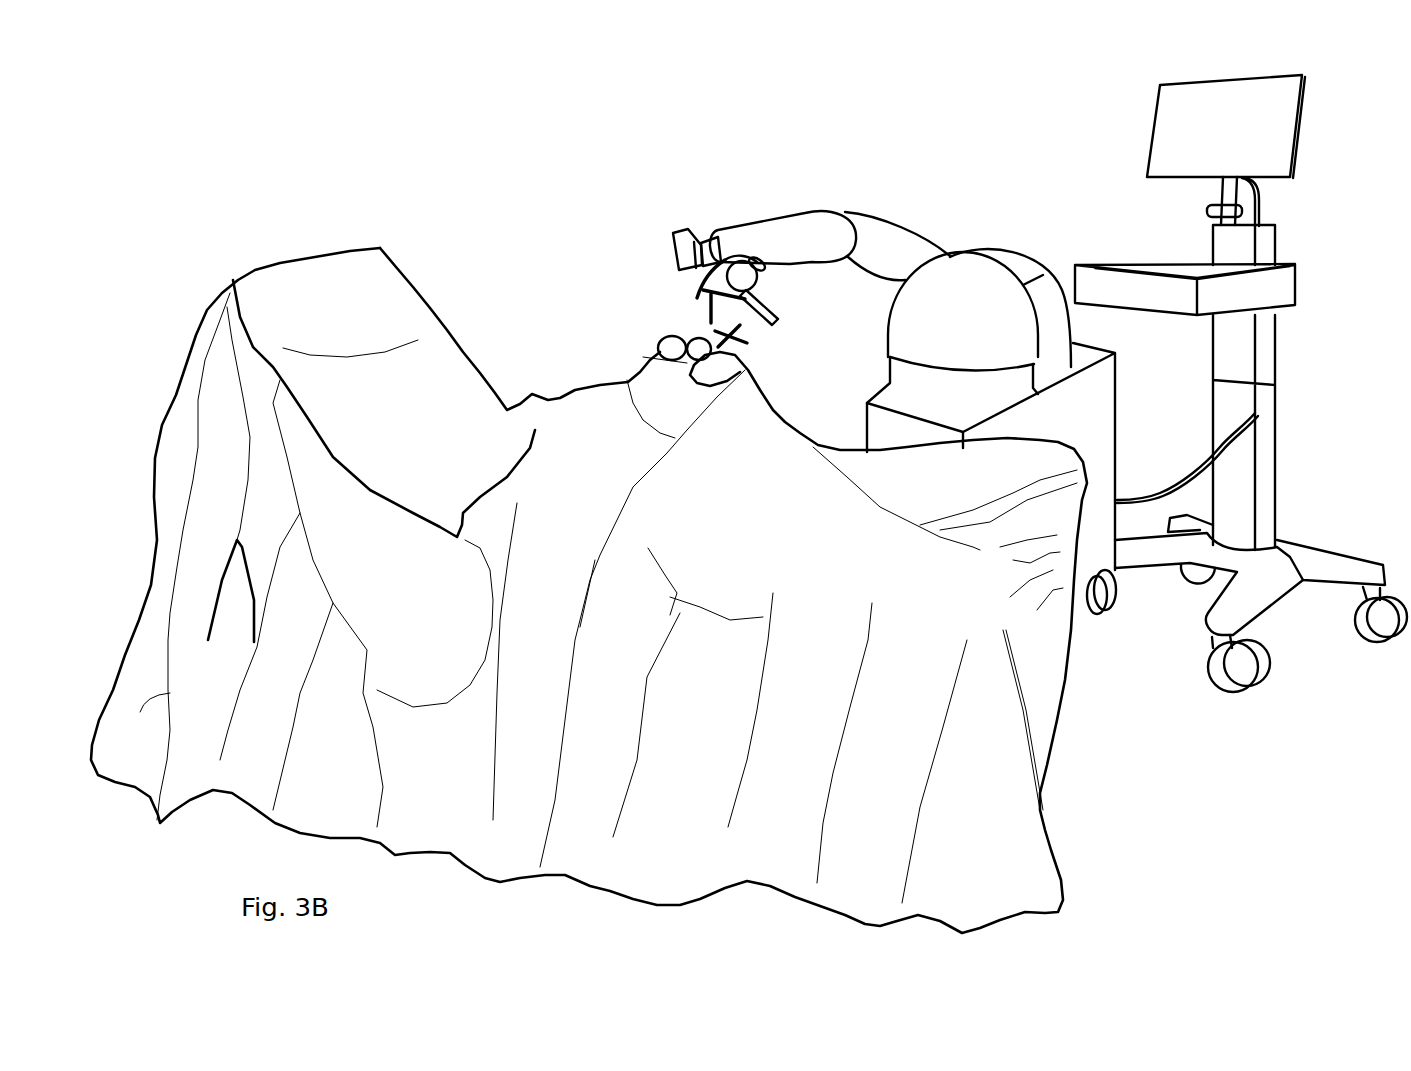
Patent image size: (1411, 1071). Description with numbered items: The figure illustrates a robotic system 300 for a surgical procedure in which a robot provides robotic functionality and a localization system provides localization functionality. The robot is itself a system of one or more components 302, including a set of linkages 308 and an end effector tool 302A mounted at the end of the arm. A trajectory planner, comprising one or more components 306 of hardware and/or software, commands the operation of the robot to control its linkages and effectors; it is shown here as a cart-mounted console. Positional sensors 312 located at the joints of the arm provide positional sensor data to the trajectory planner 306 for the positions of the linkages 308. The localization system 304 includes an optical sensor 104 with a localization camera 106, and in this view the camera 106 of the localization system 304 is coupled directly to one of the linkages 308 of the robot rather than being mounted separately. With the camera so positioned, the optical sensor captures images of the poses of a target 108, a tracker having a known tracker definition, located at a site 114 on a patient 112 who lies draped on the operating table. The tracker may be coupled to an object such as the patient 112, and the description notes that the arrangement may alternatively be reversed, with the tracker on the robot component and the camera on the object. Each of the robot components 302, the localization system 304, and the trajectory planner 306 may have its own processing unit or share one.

The robotic system 300 is at (758, 155).
The robot components 302 is at (983, 332).
The end effector tool 302A is at (752, 283).
The localization system 304 is at (710, 216).
The trajectory planner 306 is at (1105, 50).
The linkages 308 is at (828, 247).
The positional sensors 312 is at (716, 264).
The optical sensor 104 is at (664, 255).
The localization camera 106 is at (680, 265).
The target 108 is at (739, 333).
The patient 112 is at (620, 414).
The site 114 is at (664, 360).